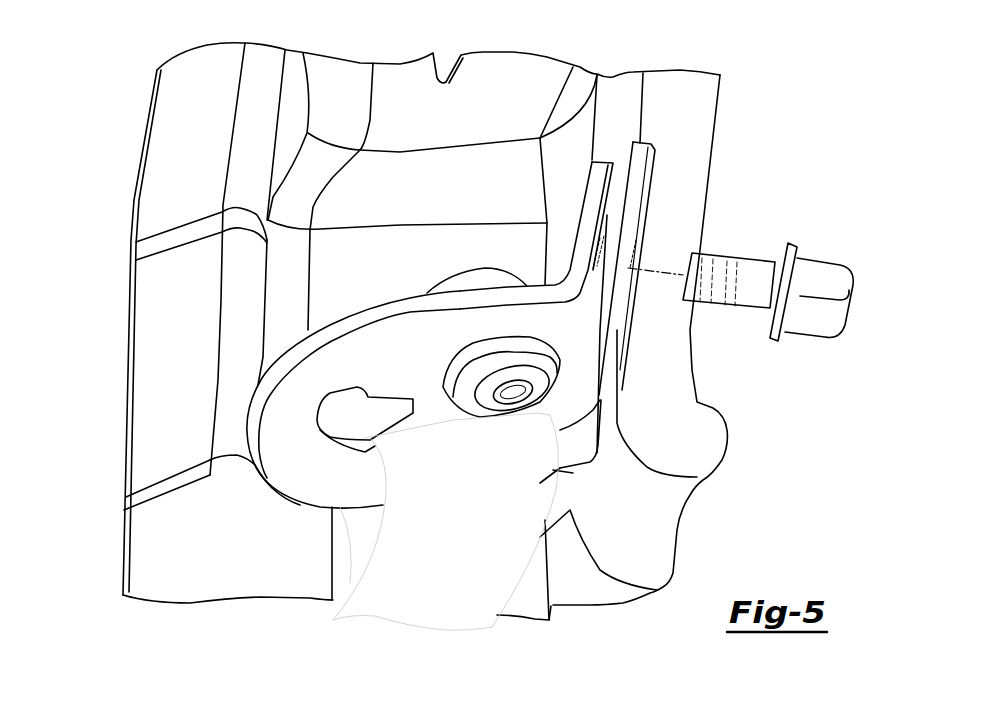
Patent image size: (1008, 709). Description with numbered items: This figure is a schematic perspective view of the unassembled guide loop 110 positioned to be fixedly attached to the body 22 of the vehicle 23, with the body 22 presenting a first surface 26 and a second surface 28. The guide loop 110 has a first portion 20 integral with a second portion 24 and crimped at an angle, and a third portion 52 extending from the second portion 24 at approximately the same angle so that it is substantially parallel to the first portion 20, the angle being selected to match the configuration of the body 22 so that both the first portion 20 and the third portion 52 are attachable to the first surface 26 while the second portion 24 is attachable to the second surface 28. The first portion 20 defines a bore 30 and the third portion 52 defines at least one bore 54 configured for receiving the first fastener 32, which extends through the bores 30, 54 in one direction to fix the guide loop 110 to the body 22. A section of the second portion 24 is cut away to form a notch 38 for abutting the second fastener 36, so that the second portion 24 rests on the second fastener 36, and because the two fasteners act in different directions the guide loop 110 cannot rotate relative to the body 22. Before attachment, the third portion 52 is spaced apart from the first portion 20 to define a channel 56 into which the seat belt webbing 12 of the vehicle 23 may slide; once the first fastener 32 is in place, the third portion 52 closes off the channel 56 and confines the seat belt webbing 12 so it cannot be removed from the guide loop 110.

The seat belt webbing 12 is at (476, 535).
The first portion 20 is at (597, 358).
The body 22 is at (220, 147).
The vehicle 23 is at (94, 146).
The second portion 24 is at (317, 490).
The first surface 26 is at (633, 85).
The second surface 28 is at (335, 272).
The bore 30 is at (641, 256).
The first fastener 32 is at (812, 320).
The second fastener 36 is at (484, 380).
The notch 38 is at (412, 398).
The third portion 52 is at (605, 171).
The bore 54 is at (601, 281).
The channel 56 is at (623, 155).
The guide loop 110 is at (734, 125).